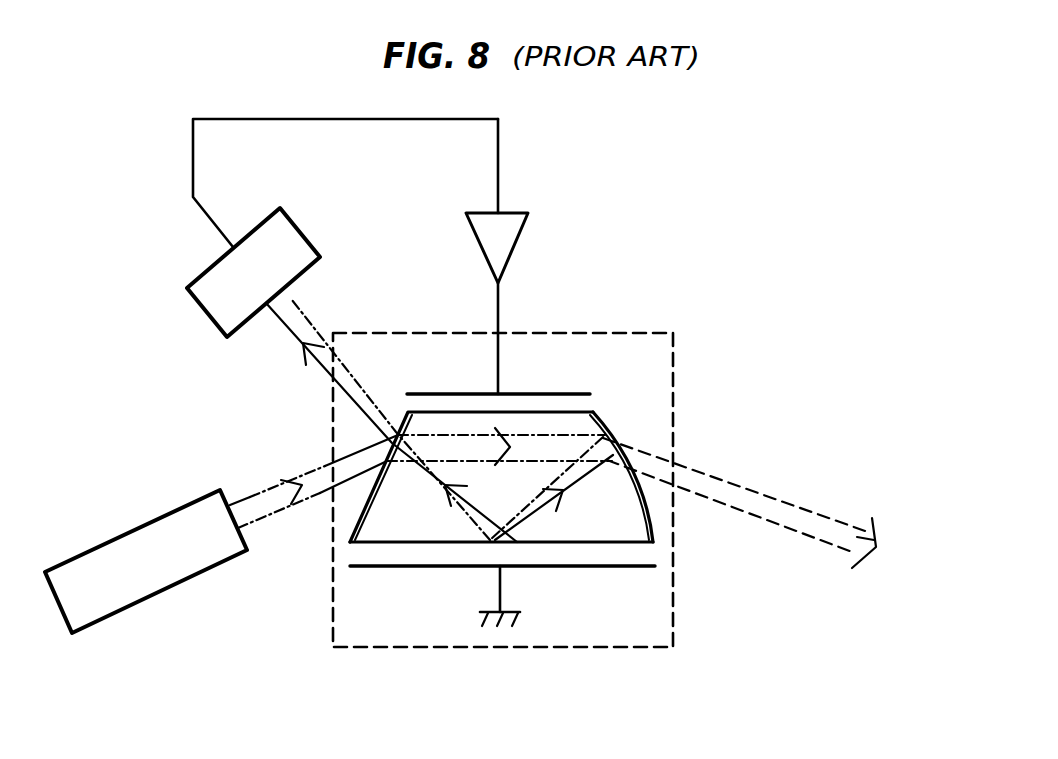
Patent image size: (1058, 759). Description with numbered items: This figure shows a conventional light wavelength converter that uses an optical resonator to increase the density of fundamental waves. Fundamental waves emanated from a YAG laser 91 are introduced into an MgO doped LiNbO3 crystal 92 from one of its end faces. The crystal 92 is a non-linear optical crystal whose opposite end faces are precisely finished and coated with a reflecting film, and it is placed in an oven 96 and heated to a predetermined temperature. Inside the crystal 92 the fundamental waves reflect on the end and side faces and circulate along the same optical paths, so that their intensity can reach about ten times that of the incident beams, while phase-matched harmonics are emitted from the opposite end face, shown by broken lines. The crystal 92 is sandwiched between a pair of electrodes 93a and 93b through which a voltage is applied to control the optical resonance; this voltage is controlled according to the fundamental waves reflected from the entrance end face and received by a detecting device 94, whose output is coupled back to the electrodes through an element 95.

The YAG laser 91 is at (155, 597).
The MgO doped LiNbO3 crystal 92 is at (597, 412).
The electrode 93a is at (418, 393).
The electrode 93b is at (360, 567).
The detecting device 94 is at (212, 318).
The amplifier 95 is at (517, 227).
The oven 96 is at (678, 348).